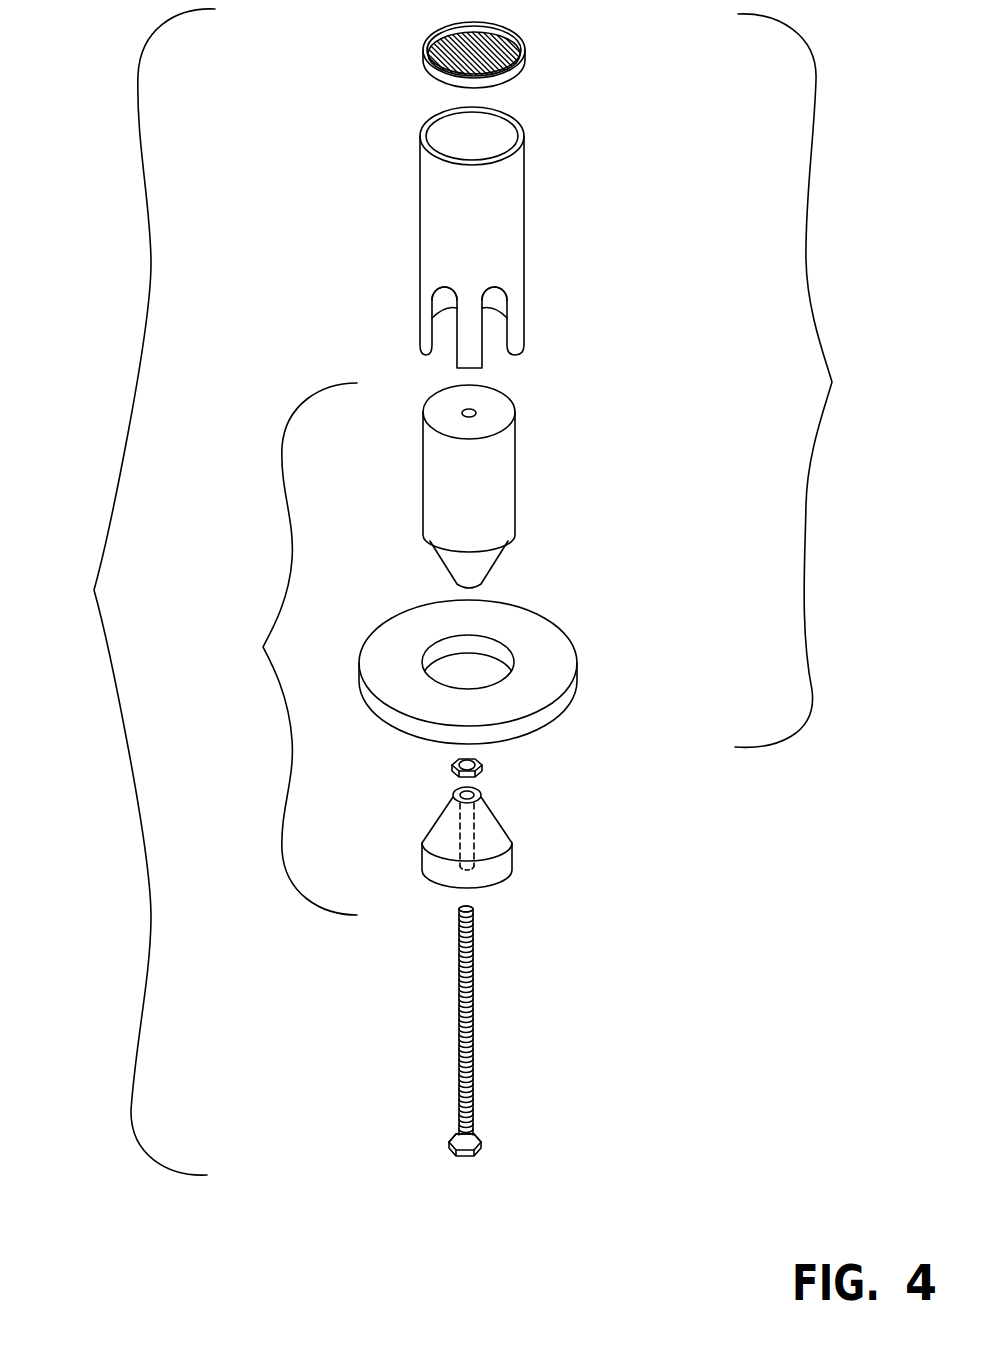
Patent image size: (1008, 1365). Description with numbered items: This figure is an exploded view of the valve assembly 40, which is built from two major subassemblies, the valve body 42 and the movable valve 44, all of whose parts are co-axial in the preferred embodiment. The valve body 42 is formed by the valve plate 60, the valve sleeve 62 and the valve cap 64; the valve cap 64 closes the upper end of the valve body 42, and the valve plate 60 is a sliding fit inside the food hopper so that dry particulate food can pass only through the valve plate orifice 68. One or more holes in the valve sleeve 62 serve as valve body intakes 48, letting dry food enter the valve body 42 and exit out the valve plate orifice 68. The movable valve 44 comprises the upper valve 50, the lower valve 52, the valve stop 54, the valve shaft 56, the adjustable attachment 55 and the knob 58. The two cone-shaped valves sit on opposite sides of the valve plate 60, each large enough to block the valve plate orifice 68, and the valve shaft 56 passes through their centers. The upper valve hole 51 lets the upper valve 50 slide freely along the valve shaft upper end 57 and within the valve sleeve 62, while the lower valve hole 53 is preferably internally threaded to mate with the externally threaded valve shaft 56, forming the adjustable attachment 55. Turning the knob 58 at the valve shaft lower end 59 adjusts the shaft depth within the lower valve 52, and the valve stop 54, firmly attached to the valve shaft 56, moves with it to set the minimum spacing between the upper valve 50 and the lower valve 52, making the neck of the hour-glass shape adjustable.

The valve assembly 40 is at (121, 592).
The valve body 42 is at (819, 380).
The movable valve 44 is at (278, 649).
The valve body intake 48 is at (445, 337).
The upper valve 50 is at (515, 514).
The upper valve hole 51 is at (476, 413).
The lower valve 52 is at (512, 868).
The lower valve hole 53 is at (481, 795).
The valve stop 54 is at (483, 766).
The adjustable attachment 55 is at (458, 833).
The valve shaft 56 is at (473, 1010).
The valve shaft upper end 57 is at (474, 907).
The knob 58 is at (481, 1141).
The valve shaft lower end 59 is at (447, 1130).
The valve plate 60 is at (577, 673).
The valve sleeve 62 is at (420, 232).
The valve cap 64 is at (423, 37).
The valve plate orifice 68 is at (477, 668).